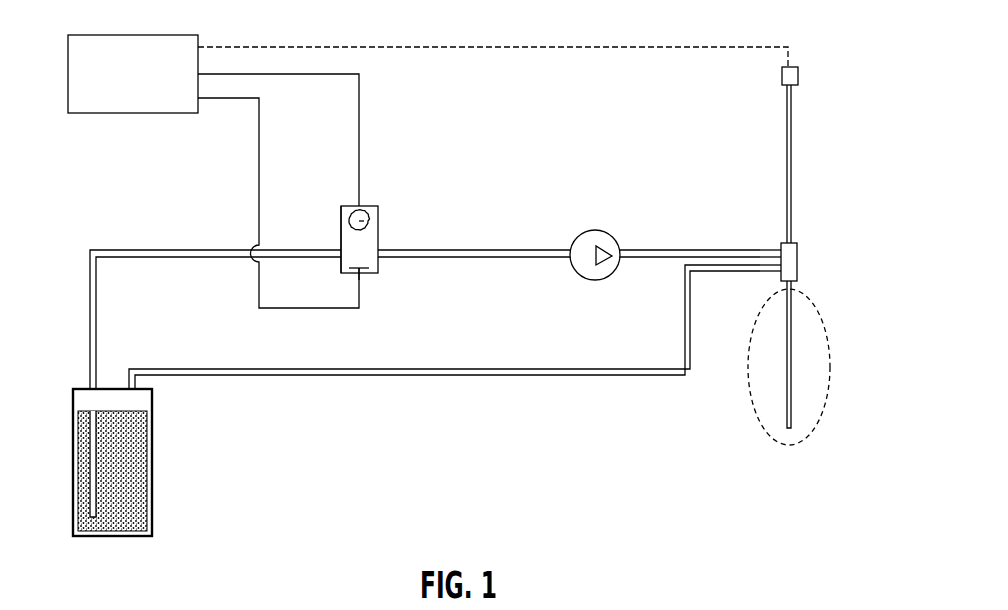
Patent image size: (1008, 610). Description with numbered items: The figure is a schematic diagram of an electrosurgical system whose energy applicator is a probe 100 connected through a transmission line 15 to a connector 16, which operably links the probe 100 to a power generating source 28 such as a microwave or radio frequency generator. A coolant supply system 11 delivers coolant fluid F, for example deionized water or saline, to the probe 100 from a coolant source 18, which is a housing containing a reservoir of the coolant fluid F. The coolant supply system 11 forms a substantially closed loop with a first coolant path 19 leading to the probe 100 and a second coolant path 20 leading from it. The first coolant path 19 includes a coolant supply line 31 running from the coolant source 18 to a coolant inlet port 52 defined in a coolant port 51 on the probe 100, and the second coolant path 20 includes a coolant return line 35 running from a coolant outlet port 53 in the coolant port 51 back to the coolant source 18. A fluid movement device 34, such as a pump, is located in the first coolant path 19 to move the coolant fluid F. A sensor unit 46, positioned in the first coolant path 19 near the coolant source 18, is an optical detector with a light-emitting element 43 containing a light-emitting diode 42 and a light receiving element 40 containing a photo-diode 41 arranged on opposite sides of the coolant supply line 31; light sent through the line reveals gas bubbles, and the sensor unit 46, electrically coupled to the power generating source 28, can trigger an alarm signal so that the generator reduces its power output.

The coolant supply system 11 is at (462, 268).
The transmission line 15 is at (793, 165).
The connector 16 is at (800, 76).
The coolant source 18 is at (149, 462).
The first coolant path 19 is at (196, 247).
The second coolant path 20 is at (276, 366).
The power generating source 28 is at (132, 35).
The coolant supply line 31 is at (540, 258).
The fluid movement device 34 is at (597, 280).
The coolant return line 35 is at (515, 366).
The light receiving element 40 is at (354, 271).
The photo-diode 41 is at (363, 271).
The light-emitting diode 42 is at (367, 219).
The light-emitting element 43 is at (348, 212).
The sensor unit 46 is at (379, 189).
The coolant port 51 is at (798, 262).
The coolant inlet port 52 is at (779, 248).
The coolant outlet port 53 is at (779, 270).
The probe 100 is at (750, 400).
The coolant fluid F is at (135, 460).